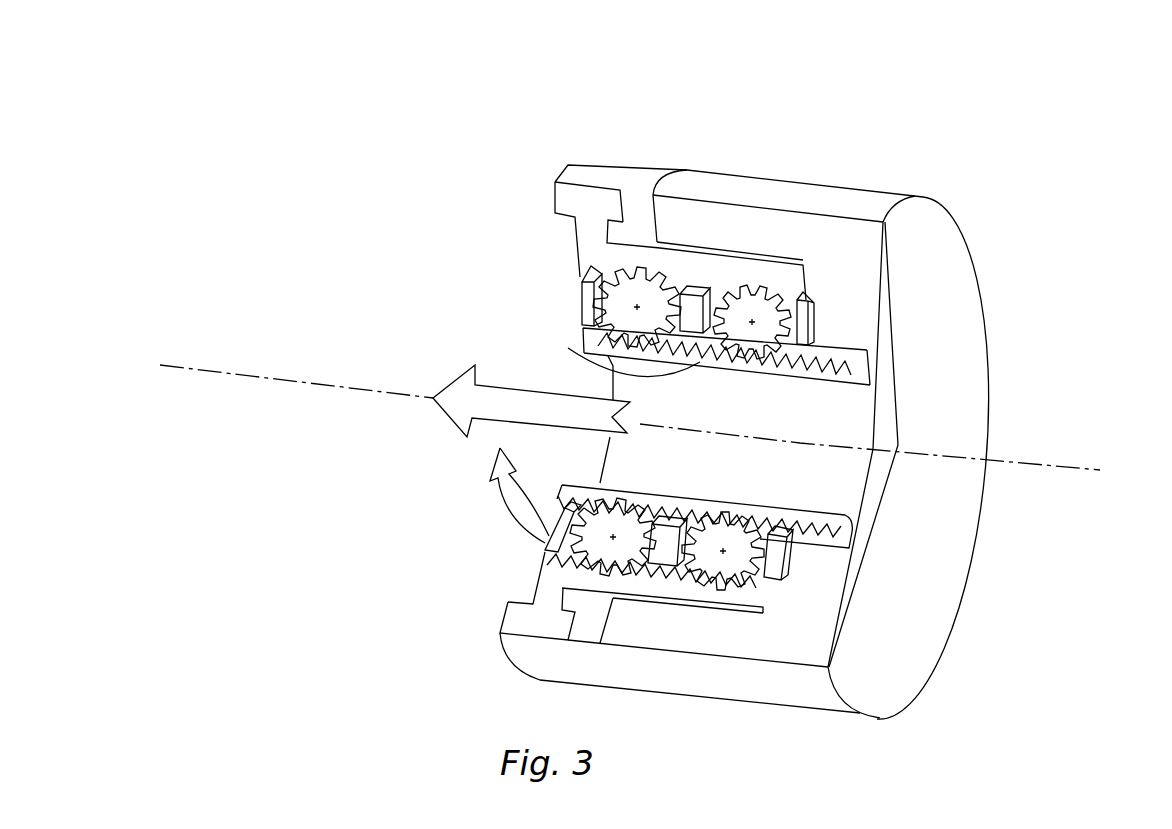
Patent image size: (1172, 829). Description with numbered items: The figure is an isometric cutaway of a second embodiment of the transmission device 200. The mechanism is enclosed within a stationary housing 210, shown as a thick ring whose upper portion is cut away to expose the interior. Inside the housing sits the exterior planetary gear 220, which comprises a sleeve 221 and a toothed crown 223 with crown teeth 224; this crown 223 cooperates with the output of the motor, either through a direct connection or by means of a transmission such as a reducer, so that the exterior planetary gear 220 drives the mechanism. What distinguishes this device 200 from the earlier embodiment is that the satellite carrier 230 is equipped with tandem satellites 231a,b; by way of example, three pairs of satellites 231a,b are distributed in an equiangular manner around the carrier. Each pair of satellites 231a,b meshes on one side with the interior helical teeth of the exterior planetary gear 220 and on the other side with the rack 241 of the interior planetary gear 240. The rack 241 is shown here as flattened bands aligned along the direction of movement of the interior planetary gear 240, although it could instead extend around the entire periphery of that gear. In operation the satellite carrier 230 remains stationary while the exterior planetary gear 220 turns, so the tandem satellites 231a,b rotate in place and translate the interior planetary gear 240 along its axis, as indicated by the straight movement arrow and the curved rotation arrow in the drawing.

The transmission device 200 is at (1026, 188).
The stationary housing 210 is at (952, 306).
The exterior planetary gear 220 is at (831, 95).
The sleeve 221 is at (655, 282).
The crown 223 is at (623, 172).
The crown teeth 224 is at (583, 175).
The satellite carrier 230 is at (578, 282).
The tandem satellites 231a,b is at (650, 283).
The interior planetary gear 240 is at (583, 335).
The rack 241 is at (612, 371).